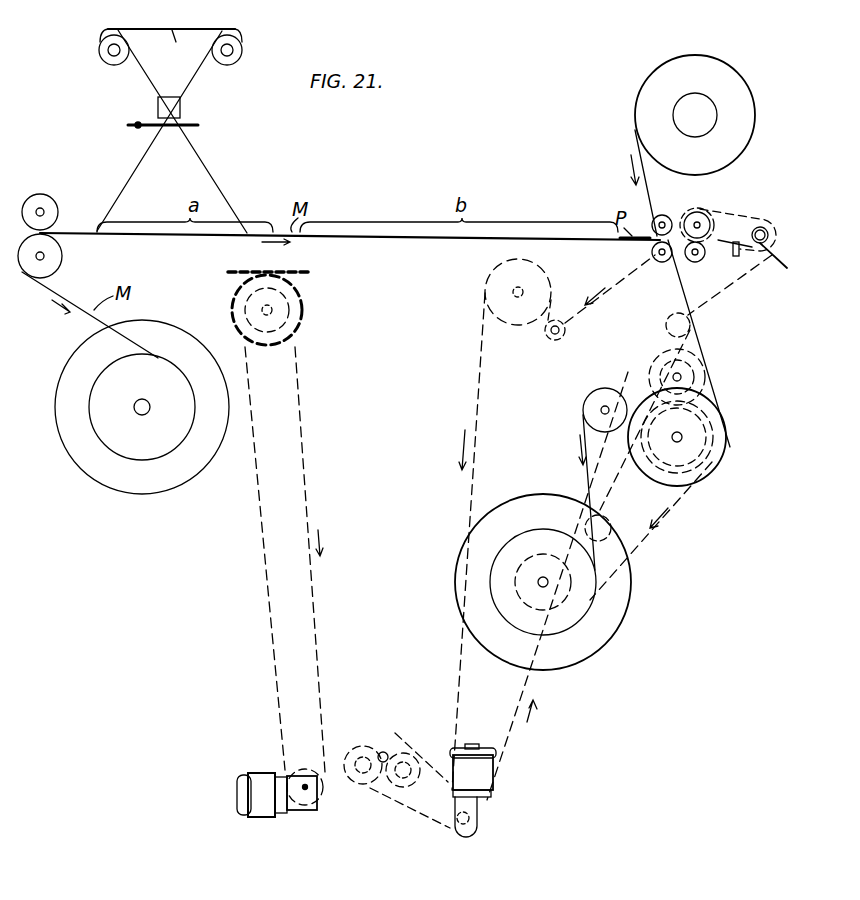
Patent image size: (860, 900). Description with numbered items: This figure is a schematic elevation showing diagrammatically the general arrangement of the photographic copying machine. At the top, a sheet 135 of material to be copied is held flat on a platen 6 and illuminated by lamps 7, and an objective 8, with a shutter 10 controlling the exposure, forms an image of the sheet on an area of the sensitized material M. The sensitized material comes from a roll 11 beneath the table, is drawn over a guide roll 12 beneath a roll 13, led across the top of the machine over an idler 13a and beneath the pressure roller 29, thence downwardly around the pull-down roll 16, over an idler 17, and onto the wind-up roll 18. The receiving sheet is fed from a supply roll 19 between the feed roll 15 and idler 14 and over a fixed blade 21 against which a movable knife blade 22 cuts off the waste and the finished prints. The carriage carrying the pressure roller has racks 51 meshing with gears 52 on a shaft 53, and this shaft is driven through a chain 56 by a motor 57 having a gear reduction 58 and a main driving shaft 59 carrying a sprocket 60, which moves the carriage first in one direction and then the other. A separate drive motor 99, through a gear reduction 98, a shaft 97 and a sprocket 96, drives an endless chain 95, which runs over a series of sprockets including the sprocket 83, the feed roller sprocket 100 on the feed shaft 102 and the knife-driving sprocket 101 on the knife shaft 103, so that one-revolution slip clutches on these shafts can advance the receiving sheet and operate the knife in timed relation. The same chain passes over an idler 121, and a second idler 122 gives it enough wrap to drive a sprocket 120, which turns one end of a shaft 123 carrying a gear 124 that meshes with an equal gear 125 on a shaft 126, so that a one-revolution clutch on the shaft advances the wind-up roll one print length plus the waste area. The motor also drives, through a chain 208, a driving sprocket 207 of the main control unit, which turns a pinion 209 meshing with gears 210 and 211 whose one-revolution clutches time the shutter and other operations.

The platen 6 is at (106, 31).
The lamps 7 is at (99, 52).
The objective 8 is at (181, 108).
The shutter 10 is at (199, 125).
The sheet of material to be copied 135 is at (192, 43).
The roll 13 is at (41, 199).
The guide roll 12 is at (56, 256).
The roll of light-sensitive coated material 11 is at (142, 407).
The racks 51 is at (313, 272).
The gears 52 is at (302, 306).
The shaft 53 is at (262, 308).
The chain 56 is at (305, 476).
The motor 57 is at (243, 789).
The gear reduction 58 is at (300, 808).
The main driving shaft 59 is at (307, 790).
The sprocket 60 is at (323, 788).
The sprocket 83 is at (490, 283).
The chain 95 is at (478, 380).
The supply roll 19 is at (665, 70).
The pressure roller 29 is at (661, 214).
The feed roller sprocket 100 is at (697, 211).
The feed roll 15 is at (706, 213).
The movable knife blade 22 is at (740, 225).
The knife shaft 103 is at (760, 226).
The fixed blade 21 is at (725, 260).
The knife-driving sprocket 101 is at (762, 250).
The feed shaft 102 is at (655, 260).
The idler 13a is at (660, 262).
The idler 14 is at (696, 264).
The second idler 122 is at (697, 326).
The shaft 123 is at (673, 377).
The gear 124 is at (698, 365).
The sprocket 120 is at (697, 378).
The shaft 126 is at (680, 436).
The gear 125 is at (706, 440).
The pull-down roll 16 is at (710, 470).
The idler 17 is at (592, 400).
The idler 121 is at (610, 526).
The wind-up roll 18 is at (570, 622).
The driving sprocket 207 is at (383, 751).
The pinion 209 is at (400, 737).
The gear 210 is at (356, 752).
The gear 211 is at (408, 784).
The chain 208 is at (432, 824).
The drive motor 99 is at (482, 750).
The gear reduction 98 is at (472, 797).
The shaft 97 is at (468, 826).
The sprocket 96 is at (453, 832).